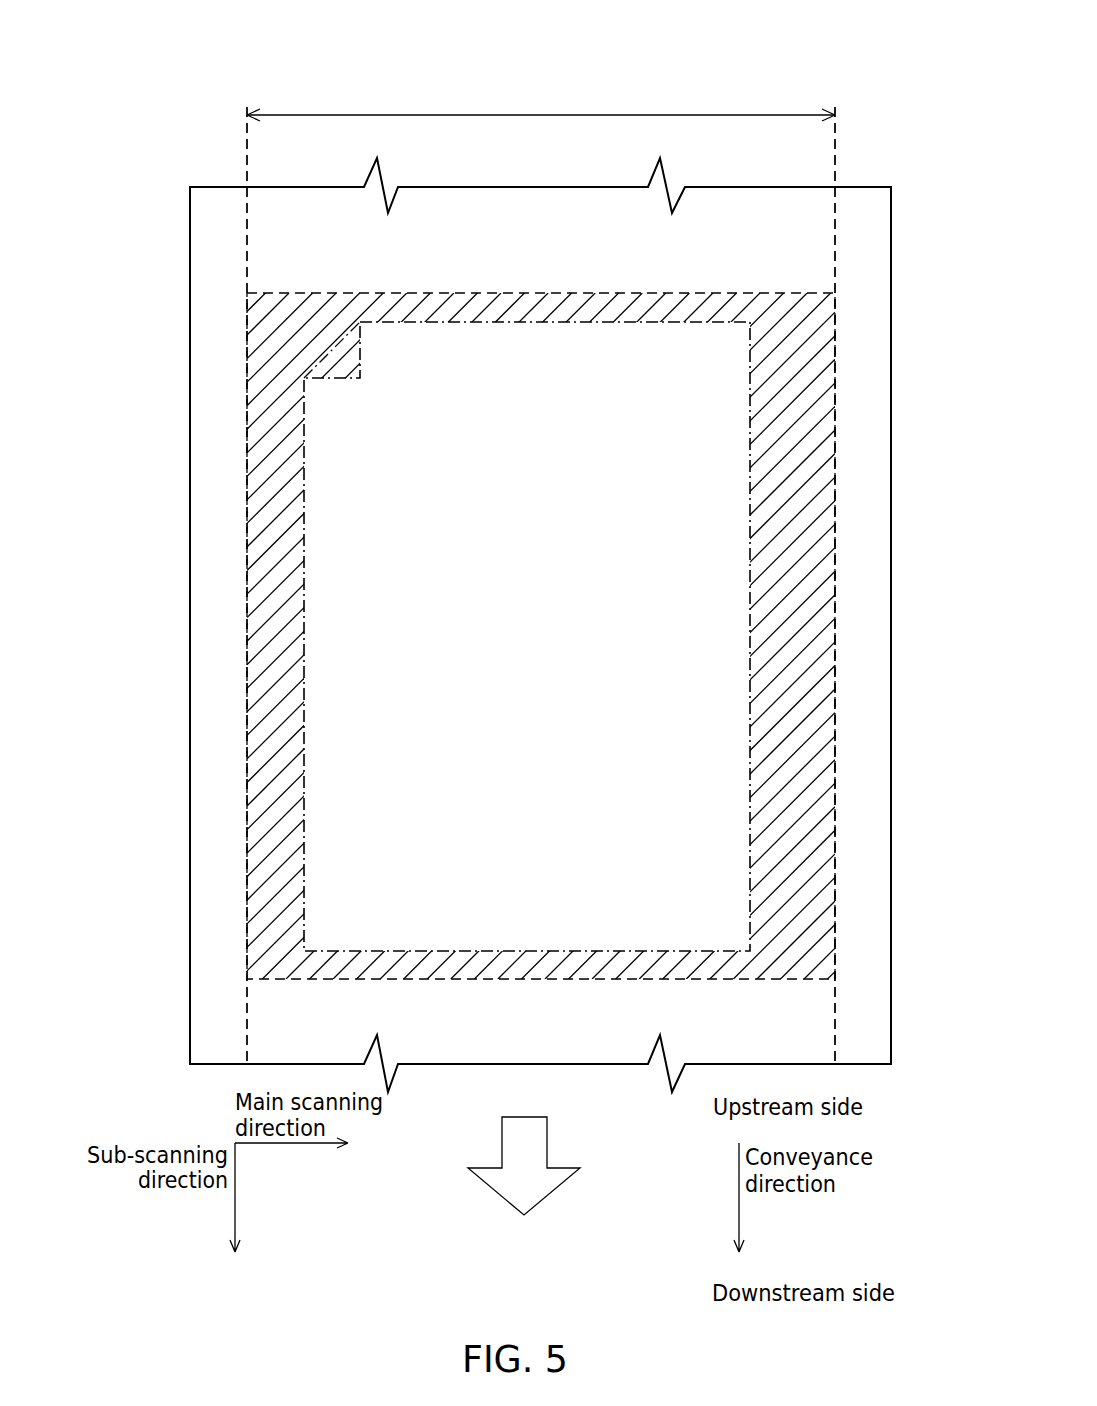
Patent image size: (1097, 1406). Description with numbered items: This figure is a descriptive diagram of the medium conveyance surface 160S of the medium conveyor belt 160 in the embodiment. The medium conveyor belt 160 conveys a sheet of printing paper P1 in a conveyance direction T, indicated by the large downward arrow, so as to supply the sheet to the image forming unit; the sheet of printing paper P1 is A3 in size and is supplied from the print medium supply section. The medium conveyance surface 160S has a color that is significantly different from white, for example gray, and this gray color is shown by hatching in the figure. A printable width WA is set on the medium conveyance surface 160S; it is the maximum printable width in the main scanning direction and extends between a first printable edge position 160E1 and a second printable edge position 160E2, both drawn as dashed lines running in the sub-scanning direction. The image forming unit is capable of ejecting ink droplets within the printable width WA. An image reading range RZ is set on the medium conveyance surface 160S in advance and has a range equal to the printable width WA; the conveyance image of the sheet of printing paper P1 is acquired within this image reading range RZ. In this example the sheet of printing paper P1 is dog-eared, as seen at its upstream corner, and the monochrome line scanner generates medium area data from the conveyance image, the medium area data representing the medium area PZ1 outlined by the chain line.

The medium conveyor belt 160 is at (708, 78).
The first printable edge position 160E1 is at (250, 213).
The second printable edge position 160E2 is at (830, 205).
The medium conveyance surface 160S is at (516, 278).
The printable width WA is at (540, 114).
The medium area PZ1 is at (688, 320).
The image reading range RZ is at (835, 265).
The sheet of printing paper P1 is at (519, 555).
The conveyance direction T is at (500, 1196).